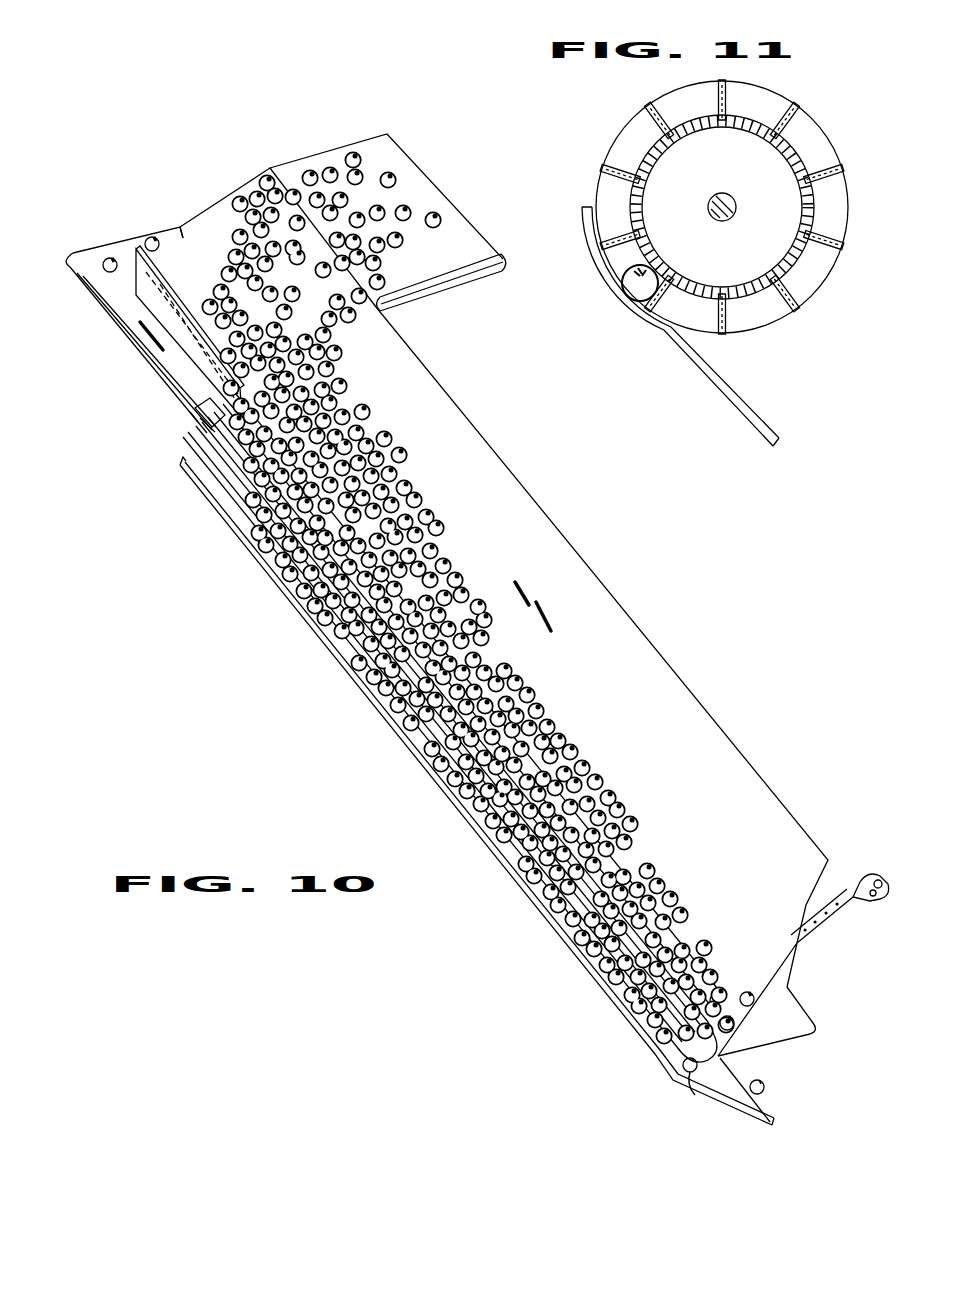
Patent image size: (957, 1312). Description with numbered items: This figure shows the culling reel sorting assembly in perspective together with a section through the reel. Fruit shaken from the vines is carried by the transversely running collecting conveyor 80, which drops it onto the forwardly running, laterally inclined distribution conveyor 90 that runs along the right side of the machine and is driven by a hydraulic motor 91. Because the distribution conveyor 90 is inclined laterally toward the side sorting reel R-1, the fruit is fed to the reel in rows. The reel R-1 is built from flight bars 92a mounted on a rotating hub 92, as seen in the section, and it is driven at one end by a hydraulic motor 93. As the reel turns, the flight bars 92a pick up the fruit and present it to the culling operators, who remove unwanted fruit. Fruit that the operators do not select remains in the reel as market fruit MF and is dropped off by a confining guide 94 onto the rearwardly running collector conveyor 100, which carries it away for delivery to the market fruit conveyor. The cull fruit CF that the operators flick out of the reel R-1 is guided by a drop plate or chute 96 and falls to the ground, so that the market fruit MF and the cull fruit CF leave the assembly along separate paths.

In FIG. 10, the collecting conveyor 80 is at (395, 166).
In FIG. 10, the distribution conveyor 90 is at (553, 531).
In FIG. 10, the hydraulic motor 91 is at (858, 872).
In FIG. 10, the rotating hub 92 is at (673, 1040).
In FIG. 11, the rotating hub 92 is at (810, 198).
In FIG. 10, the flight bars 92a is at (718, 995).
In FIG. 11, the flight bars 92a is at (812, 150).
In FIG. 10, the hydraulic motor 93 is at (198, 402).
In FIG. 10, the confining guide 94 is at (240, 515).
In FIG. 11, the confining guide 94 is at (660, 318).
In FIG. 10, the drop plate or chute 96 is at (608, 992).
In FIG. 10, the collector conveyor 100 is at (99, 290).
In FIG. 10, the market fruit MF is at (152, 237).
In FIG. 11, the market fruit MF is at (640, 283).
In FIG. 10, the cull fruit CF is at (755, 1093).
In FIG. 10, the side sorting reel R-1 is at (703, 1007).
In FIG. 11, the side sorting reel R-1 is at (596, 138).